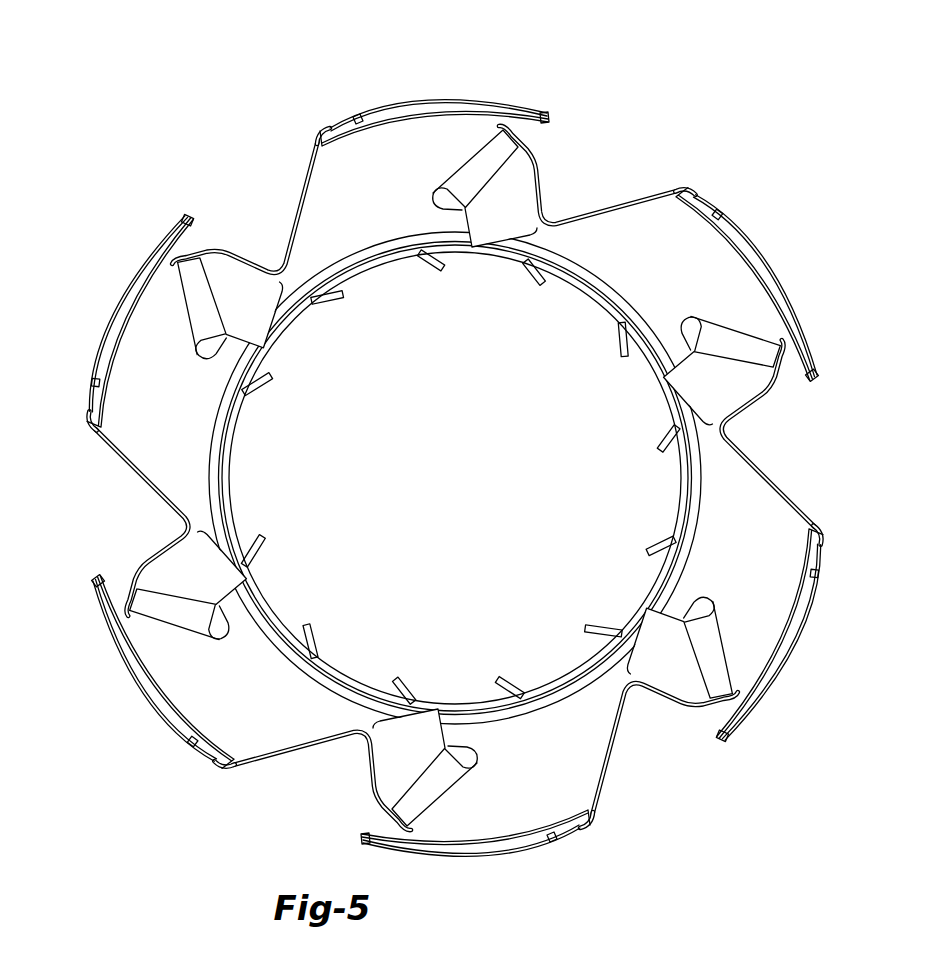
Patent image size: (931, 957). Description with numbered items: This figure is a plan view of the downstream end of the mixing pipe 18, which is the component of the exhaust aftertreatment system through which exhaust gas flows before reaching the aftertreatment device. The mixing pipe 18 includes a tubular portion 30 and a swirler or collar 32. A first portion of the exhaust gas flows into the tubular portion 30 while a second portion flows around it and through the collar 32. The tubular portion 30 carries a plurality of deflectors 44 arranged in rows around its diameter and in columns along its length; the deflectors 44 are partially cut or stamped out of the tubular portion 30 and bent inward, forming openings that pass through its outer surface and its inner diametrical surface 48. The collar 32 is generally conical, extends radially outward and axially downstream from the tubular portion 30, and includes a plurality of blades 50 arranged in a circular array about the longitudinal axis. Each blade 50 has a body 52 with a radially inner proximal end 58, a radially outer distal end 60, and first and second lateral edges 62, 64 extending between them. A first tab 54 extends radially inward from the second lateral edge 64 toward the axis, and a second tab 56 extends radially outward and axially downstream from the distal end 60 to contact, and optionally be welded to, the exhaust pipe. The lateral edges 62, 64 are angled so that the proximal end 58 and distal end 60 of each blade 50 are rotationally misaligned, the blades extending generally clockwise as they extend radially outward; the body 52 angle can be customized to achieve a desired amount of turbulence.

The mixing pipe 18 is at (617, 99).
The tubular portion 30 is at (584, 660).
The collar 32 is at (528, 106).
The deflectors 44 is at (560, 272).
The inner diametrical surface 48 is at (582, 292).
The blades 50 is at (402, 97).
The body 52 is at (332, 166).
The first tab 54 is at (508, 200).
The second tab 56 is at (470, 100).
The proximal end 58 is at (363, 238).
The distal end 60 is at (370, 116).
The first lateral edge 62 is at (303, 190).
The second lateral edge 64 is at (437, 193).